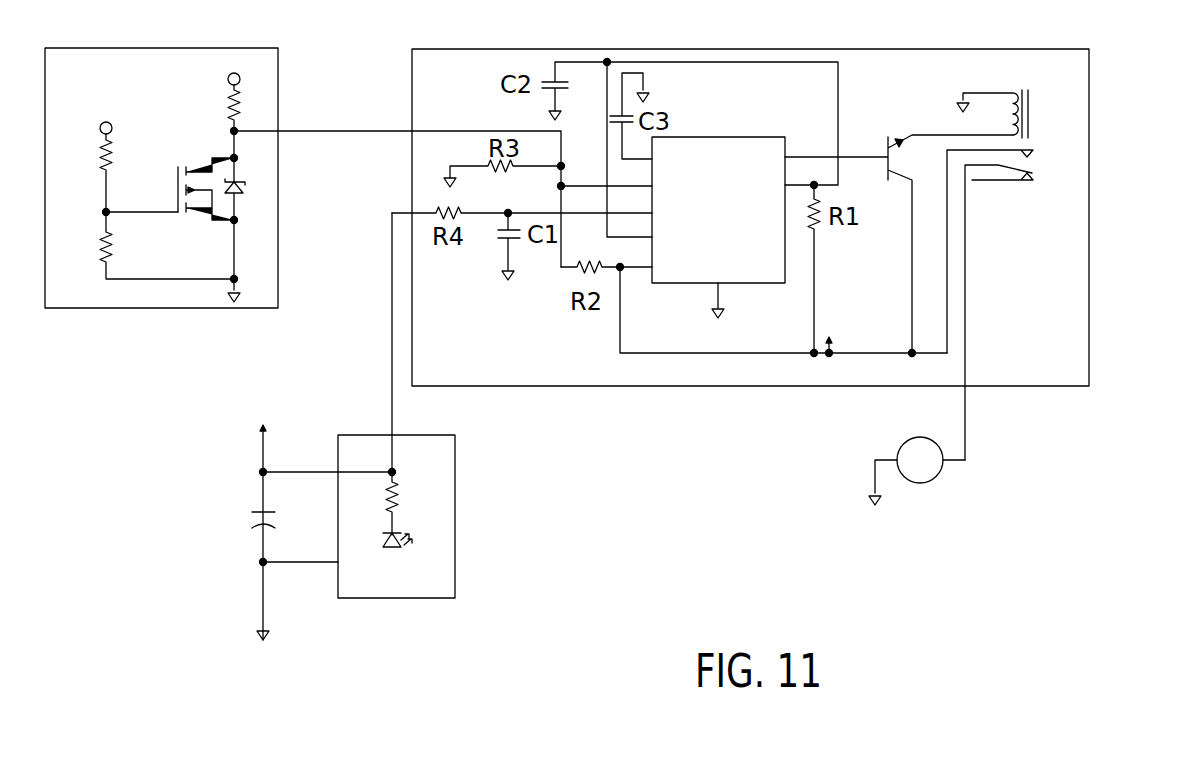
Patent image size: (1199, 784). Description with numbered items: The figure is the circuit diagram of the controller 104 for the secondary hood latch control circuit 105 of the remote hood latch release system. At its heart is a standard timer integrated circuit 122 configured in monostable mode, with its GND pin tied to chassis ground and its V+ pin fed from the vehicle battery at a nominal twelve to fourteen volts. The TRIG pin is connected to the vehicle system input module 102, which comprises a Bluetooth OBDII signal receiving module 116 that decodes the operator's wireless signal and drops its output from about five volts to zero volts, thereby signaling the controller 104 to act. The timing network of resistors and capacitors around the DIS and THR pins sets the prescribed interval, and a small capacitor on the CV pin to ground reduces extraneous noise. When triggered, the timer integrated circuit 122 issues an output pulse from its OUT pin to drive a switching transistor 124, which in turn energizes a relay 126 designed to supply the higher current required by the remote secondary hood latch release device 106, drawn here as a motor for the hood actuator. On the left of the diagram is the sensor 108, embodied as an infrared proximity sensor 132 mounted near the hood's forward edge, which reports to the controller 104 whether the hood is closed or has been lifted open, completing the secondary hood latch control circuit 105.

The infrared proximity sensor 132 is at (260, 74).
The sensor 108 is at (83, 292).
The controller 104 is at (1062, 258).
The secondary hood latch control circuit 105 is at (643, 355).
The 555 timer integrated circuit 122 is at (708, 150).
The switching transistor 124 is at (888, 150).
The relay 126 is at (997, 90).
The remote secondary hood latch release device 106 is at (913, 485).
The vehicle system input module 102 is at (442, 510).
The Bluetooth OBDII signal receiving module 116 is at (440, 578).